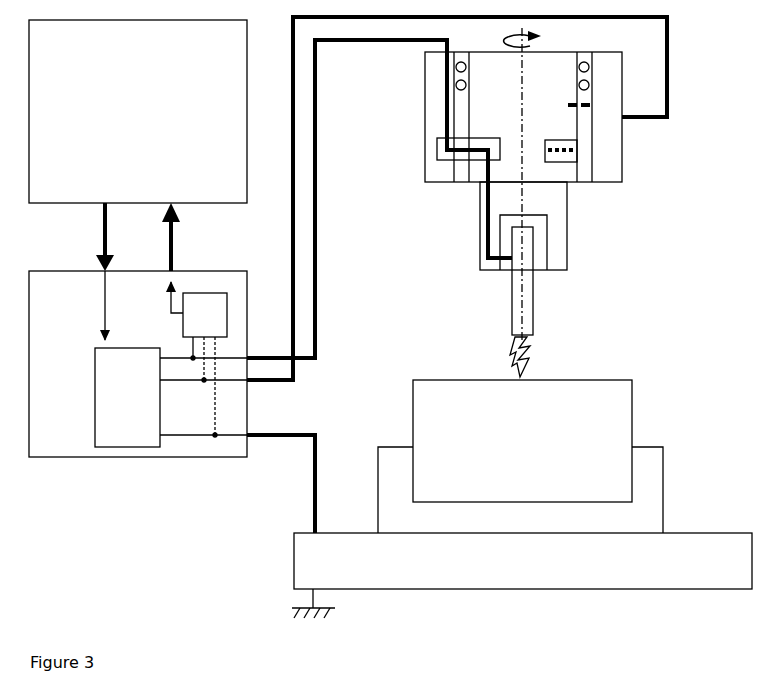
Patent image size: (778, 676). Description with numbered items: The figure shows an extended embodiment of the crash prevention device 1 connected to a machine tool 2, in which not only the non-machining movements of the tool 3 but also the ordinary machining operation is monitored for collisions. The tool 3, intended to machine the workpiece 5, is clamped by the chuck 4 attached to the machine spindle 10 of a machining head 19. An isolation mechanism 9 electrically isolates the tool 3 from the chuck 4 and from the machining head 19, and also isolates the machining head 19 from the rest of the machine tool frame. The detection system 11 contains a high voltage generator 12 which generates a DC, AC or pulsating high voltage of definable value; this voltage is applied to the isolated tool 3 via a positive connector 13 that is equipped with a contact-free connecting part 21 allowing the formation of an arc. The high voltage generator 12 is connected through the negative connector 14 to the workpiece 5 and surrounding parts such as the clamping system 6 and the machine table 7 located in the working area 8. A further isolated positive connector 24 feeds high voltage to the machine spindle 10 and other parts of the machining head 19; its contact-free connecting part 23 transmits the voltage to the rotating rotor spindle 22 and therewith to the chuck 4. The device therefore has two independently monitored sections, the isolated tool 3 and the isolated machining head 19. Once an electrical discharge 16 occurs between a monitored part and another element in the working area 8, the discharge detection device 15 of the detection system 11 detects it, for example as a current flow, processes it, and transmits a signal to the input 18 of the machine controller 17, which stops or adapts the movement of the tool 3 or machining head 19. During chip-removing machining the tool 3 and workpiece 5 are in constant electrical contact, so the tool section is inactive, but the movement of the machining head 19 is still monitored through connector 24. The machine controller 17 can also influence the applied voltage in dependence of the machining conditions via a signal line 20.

The crash prevention device 1 is at (128, 480).
The machine tool 2 is at (655, 172).
The tool 3 is at (536, 305).
The chuck 4 is at (578, 250).
The workpiece 5 is at (532, 448).
The clamping system 6 is at (532, 525).
The machine table 7 is at (532, 570).
The working area 8 is at (664, 362).
The isolation mechanism 9 is at (536, 232).
The machine spindle 10 is at (616, 142).
The detection system 11 is at (72, 367).
The high voltage generator 12 is at (133, 408).
The positive connector 13 is at (318, 340).
The negative connector 14 is at (318, 455).
The discharge detection device 15 is at (199, 359).
The electrical discharge 16 is at (540, 357).
The machine controller 17 is at (148, 121).
The input 18 is at (172, 223).
The machining head 19 is at (413, 117).
The signal line 20 is at (93, 237).
The contact-free connecting part 21 is at (478, 153).
The rotor spindle 22 is at (512, 95).
The contact-free connecting part 23 is at (598, 100).
The further isolated positive connector 24 is at (668, 72).